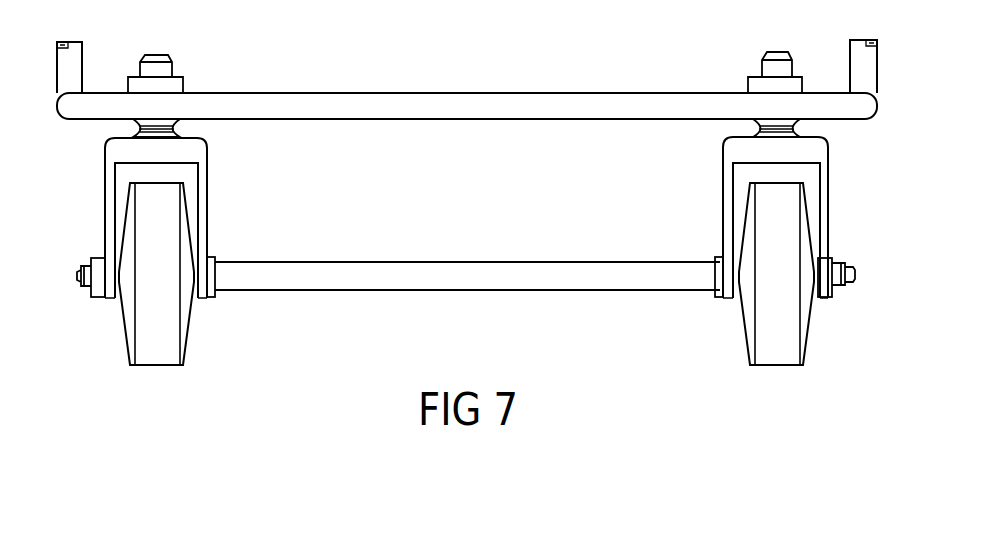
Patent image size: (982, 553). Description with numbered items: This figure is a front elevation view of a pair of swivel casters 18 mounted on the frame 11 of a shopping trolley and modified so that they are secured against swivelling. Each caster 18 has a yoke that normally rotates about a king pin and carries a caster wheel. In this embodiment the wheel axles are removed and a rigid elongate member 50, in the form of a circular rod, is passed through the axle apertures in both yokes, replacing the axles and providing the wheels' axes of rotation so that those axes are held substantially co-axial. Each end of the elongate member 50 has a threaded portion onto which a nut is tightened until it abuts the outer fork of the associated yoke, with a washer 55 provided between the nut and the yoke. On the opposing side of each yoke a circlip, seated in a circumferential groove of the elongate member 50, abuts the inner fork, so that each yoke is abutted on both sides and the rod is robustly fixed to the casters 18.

The frame 11 is at (303, 106).
The caster 18 is at (700, 193).
The elongate member 50 is at (458, 256).
The washer 55 is at (100, 300).